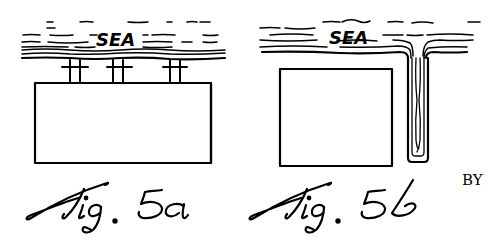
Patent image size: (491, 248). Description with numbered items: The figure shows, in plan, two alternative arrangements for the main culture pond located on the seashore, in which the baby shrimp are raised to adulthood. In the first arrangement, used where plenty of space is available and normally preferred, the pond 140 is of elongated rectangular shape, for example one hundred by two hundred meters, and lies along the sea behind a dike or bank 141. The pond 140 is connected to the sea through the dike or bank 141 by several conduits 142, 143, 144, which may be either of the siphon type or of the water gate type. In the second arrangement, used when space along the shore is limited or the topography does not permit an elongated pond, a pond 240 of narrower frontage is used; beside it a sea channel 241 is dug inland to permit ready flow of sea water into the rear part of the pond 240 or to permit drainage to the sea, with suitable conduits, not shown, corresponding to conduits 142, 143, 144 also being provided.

In FIG. 5A, the pond 140 is at (203, 133).
In FIG. 5A, the dike or bank 141 is at (33, 60).
In FIG. 5A, the conduit 142 is at (101, 80).
In FIG. 5A, the conduit 143 is at (147, 80).
In FIG. 5A, the conduit 144 is at (196, 80).
In FIG. 5B, the pond 240 is at (281, 127).
In FIG. 5B, the sea channel 241 is at (428, 107).